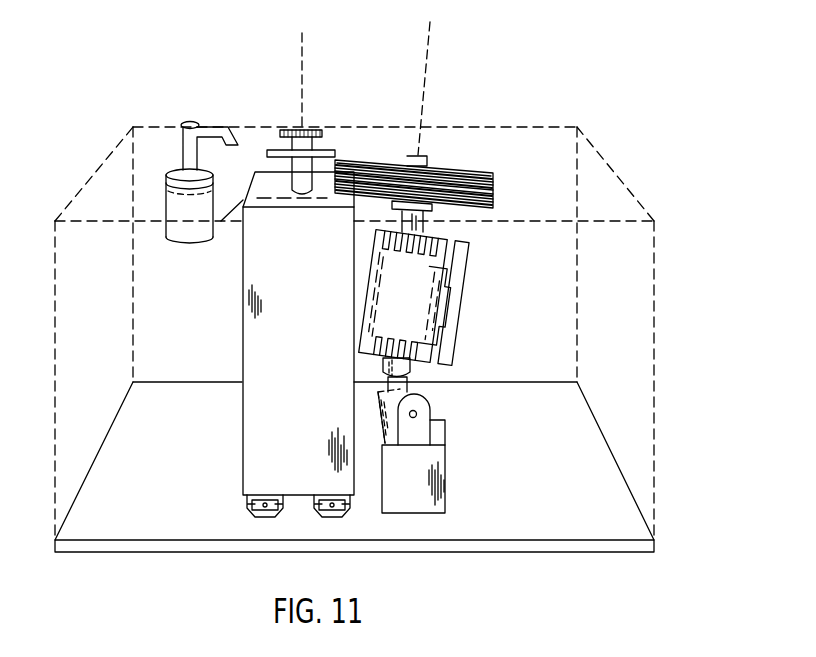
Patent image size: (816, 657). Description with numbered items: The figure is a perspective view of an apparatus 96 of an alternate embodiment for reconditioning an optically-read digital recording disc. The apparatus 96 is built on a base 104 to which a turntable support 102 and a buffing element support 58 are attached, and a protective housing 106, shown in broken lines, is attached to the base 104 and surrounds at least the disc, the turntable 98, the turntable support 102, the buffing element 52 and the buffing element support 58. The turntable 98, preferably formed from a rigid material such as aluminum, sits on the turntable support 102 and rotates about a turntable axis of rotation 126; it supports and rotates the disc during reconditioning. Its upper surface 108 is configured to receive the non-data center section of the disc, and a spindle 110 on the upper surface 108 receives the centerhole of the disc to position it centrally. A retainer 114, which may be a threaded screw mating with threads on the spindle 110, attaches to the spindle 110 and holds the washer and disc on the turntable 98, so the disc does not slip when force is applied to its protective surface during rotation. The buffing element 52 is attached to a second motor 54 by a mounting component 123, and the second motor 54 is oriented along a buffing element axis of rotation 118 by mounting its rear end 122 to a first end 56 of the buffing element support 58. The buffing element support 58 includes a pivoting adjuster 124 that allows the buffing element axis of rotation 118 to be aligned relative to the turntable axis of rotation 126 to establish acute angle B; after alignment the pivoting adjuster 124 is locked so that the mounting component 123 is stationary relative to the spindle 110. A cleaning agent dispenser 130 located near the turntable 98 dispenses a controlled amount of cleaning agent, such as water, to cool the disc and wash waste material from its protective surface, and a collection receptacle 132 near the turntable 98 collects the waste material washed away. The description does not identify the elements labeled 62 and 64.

The apparatus 96 is at (559, 640).
The base 104 is at (603, 553).
The protective housing 106 is at (139, 494).
The turntable support 102 is at (241, 393).
The cleaning agent dispenser 130 is at (167, 192).
The collection receptacle 132 is at (243, 200).
The turntable axis of rotation 126 is at (300, 57).
The spindle 110 is at (281, 139).
The retainer 114 is at (306, 129).
The upper surface 108 is at (270, 149).
The turntable 98 is at (333, 148).
The buffing element axis of rotation 118 is at (428, 93).
The buffing element 52 is at (462, 165).
The rods 62 is at (487, 178).
The mounting bracket 64 is at (473, 209).
The mounting component 123 is at (424, 227).
The second motor 54 is at (460, 352).
The rear end 122 is at (410, 380).
The pivoting adjuster 124 is at (418, 414).
The first end 56 is at (418, 388).
The buffing element support 58 is at (445, 462).